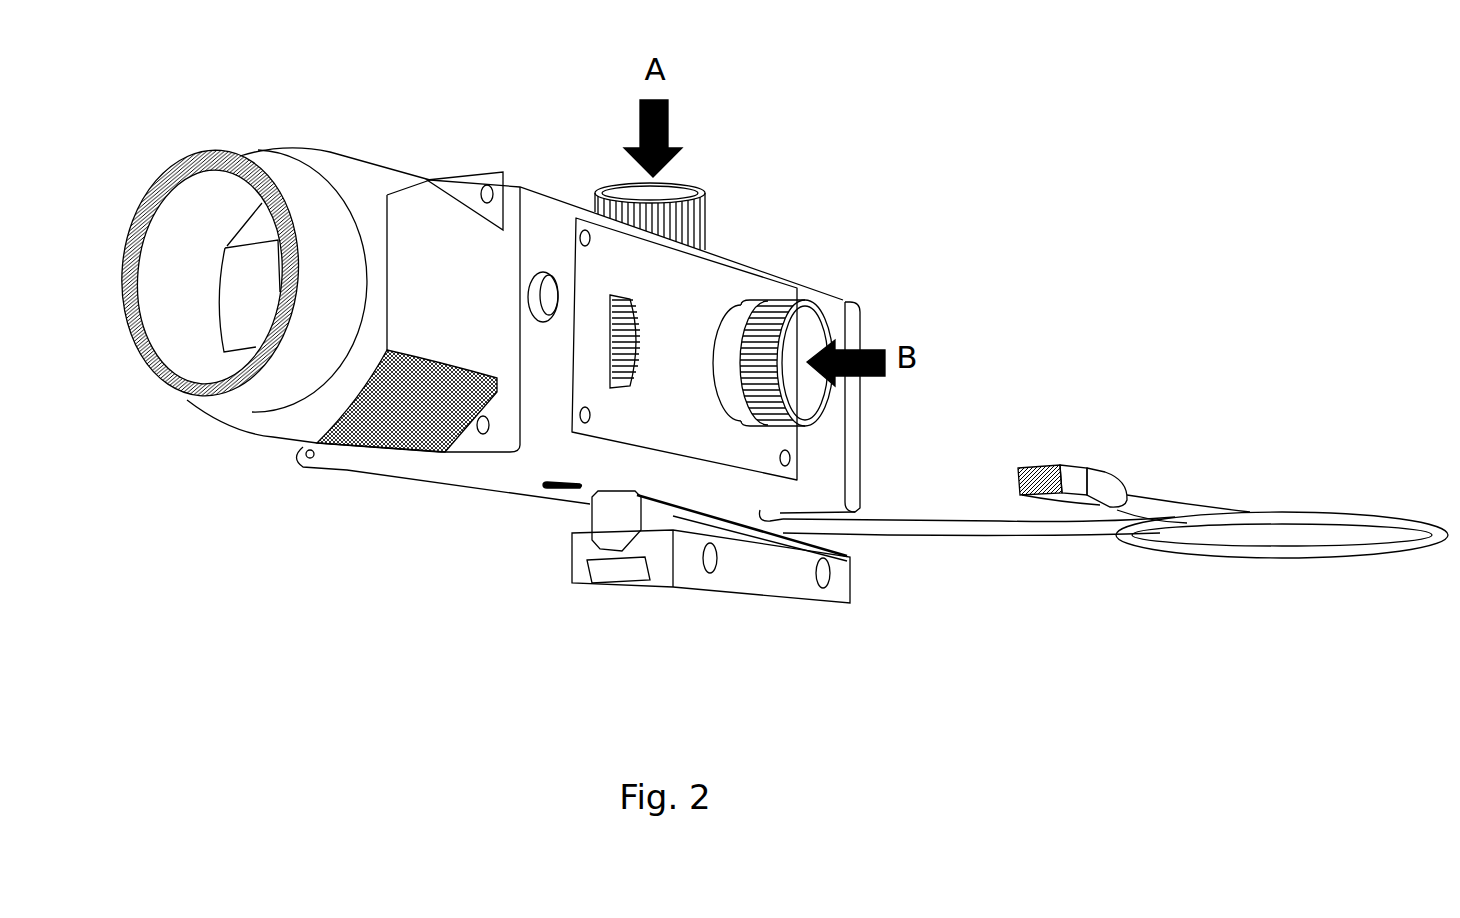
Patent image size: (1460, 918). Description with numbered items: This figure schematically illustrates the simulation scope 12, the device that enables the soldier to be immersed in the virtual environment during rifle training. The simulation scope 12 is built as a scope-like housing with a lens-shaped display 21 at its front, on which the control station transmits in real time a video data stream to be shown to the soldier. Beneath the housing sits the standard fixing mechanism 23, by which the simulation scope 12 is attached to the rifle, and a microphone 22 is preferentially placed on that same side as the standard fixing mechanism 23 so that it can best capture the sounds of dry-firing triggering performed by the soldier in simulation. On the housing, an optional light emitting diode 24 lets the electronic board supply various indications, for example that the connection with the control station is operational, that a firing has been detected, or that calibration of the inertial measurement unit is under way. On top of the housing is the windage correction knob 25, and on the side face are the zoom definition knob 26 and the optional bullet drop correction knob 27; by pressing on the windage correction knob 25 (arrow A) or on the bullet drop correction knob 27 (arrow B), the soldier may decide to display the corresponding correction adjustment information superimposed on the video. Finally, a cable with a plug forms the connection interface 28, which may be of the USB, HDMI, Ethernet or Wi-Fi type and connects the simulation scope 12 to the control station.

The simulation scope 12 is at (443, 470).
The display 21 is at (263, 262).
The microphone 22 is at (565, 490).
The standard fixing mechanism 23 is at (783, 588).
The light emitting diode 24 is at (535, 277).
The windage correction knob 25 is at (672, 195).
The zoom definition knob 26 is at (633, 333).
The bullet drop correction knob 27 is at (783, 348).
The connection interface 28 is at (1078, 476).